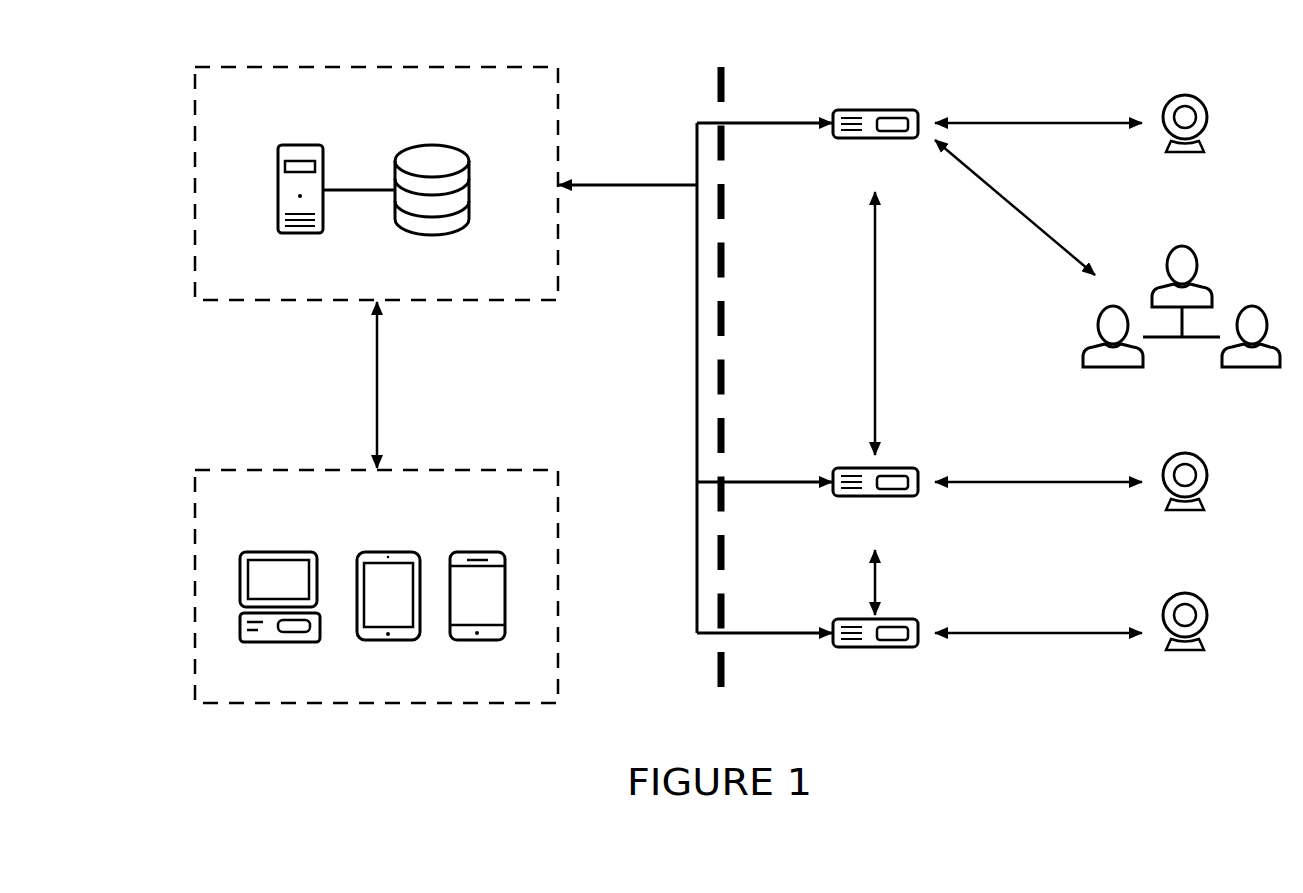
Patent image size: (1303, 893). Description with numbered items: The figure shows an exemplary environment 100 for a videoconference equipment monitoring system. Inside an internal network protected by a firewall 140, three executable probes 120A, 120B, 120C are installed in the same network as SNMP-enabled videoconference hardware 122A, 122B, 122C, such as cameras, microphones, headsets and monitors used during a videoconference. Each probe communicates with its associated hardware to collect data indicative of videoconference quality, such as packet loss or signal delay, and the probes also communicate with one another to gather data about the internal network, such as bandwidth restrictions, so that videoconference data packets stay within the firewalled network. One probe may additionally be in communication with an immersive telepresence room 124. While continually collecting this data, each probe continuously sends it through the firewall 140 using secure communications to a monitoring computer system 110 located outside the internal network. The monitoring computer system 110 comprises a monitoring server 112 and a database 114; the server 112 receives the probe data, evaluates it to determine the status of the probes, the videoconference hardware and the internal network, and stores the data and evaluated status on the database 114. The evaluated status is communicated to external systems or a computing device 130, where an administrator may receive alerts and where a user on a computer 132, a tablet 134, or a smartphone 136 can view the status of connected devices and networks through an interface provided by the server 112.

The environment 100 is at (1153, 75).
The monitoring computer system 110 is at (376, 183).
The monitoring server 112 is at (336, 214).
The database 114 is at (432, 214).
The executable probe 120A is at (875, 146).
The executable probe 120B is at (875, 504).
The executable probe 120C is at (875, 655).
The videoconference hardware 122A is at (1183, 145).
The videoconference hardware 122B is at (1184, 504).
The videoconference hardware 122C is at (1184, 644).
The immersive telepresence room 124 is at (1181, 327).
The computing device 130 is at (376, 586).
The computer 132 is at (280, 624).
The tablet 134 is at (388, 624).
The smartphone 136 is at (477, 624).
The firewall 140 is at (726, 406).